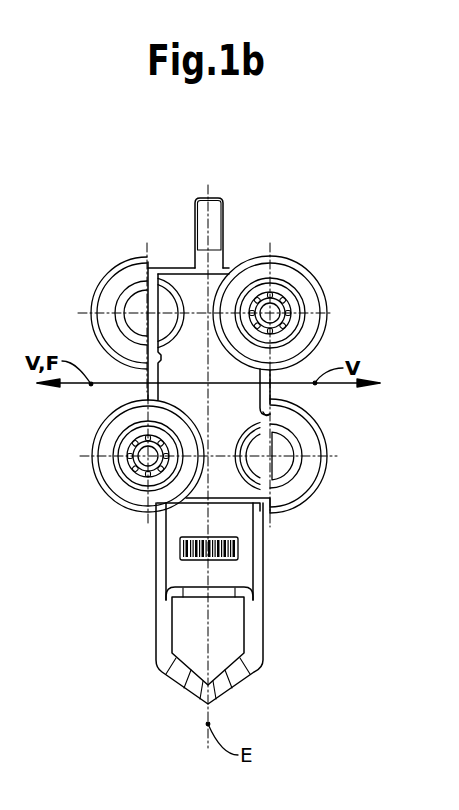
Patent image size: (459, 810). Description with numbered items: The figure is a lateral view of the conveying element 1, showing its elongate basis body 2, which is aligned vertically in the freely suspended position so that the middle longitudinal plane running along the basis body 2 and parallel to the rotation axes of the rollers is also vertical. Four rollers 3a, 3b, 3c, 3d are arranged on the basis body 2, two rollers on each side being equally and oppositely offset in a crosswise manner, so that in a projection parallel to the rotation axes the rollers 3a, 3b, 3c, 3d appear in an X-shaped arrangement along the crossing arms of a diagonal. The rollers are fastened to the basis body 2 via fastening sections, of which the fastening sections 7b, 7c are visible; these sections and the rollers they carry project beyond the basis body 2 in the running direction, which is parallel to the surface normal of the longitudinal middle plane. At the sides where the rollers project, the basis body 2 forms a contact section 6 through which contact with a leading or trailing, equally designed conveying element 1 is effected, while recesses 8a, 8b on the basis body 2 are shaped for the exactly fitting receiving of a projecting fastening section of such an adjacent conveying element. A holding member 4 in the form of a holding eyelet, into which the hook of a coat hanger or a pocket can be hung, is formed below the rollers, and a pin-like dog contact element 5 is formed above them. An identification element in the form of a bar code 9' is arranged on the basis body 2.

The conveying element 1 is at (303, 226).
The basis body 2 is at (186, 524).
The roller 3a is at (305, 290).
The roller 3b is at (130, 498).
The roller 3c is at (137, 269).
The roller 3d is at (293, 493).
The holding member 4 is at (184, 650).
The dog contact element 5 is at (203, 220).
The contact section 6 is at (268, 415).
The fastening section 7b is at (285, 467).
The fastening section 7c is at (131, 308).
The recess 8a is at (159, 298).
The recess 8b is at (253, 448).
The bar code 9' is at (257, 563).